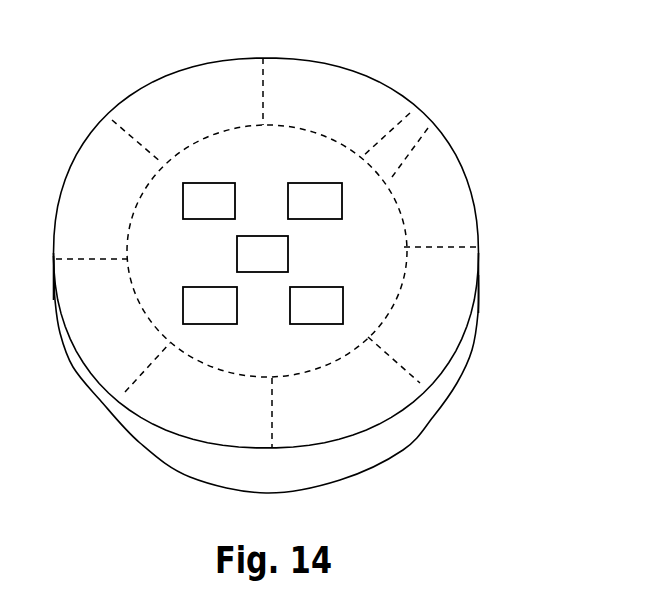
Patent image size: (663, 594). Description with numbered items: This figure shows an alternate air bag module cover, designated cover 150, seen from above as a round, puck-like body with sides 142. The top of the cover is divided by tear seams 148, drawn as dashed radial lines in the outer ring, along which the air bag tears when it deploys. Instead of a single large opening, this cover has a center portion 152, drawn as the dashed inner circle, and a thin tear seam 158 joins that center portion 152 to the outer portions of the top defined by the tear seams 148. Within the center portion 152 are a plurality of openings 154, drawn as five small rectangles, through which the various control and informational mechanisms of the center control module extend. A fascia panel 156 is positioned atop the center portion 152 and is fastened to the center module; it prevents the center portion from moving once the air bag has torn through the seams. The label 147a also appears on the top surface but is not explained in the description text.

The cover 150 is at (322, 251).
The sides 142 is at (422, 403).
The top surface 147a is at (430, 193).
The tear seams 148 is at (442, 240).
The thin tear seam 158 is at (428, 128).
The center portion 152 is at (345, 160).
The fascia panel 156 is at (283, 193).
The openings 154 is at (218, 182).